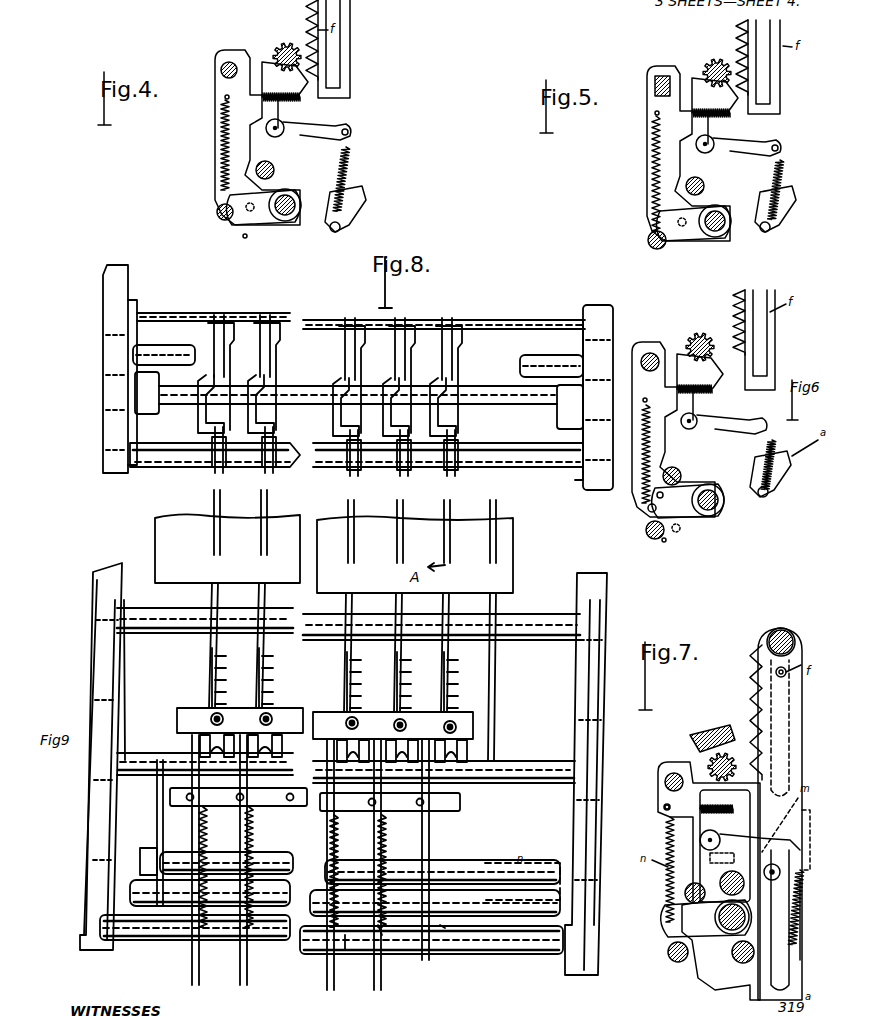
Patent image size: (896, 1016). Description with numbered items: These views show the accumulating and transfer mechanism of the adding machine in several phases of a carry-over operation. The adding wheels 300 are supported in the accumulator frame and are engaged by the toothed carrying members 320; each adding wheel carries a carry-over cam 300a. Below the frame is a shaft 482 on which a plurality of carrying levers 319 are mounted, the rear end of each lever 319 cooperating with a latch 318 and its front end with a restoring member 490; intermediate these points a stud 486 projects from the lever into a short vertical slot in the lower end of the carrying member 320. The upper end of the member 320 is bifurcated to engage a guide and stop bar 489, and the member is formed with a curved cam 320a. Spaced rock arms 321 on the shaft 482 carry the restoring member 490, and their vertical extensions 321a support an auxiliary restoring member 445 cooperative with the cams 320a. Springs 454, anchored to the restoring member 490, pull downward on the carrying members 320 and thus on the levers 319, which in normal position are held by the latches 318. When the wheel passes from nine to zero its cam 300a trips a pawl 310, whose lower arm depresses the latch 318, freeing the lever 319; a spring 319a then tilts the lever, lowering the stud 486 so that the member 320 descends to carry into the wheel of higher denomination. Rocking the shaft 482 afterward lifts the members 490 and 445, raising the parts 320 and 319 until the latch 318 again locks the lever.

In FIG. 4, the adding wheels 300 is at (290, 44).
In FIG. 5, the adding wheels 300 is at (733, 52).
In FIG. 6, the adding wheels 300 is at (700, 346).
In FIG. 7, the adding wheels 300 is at (705, 757).
In FIG. 9, the adding wheels 300 is at (268, 735).
In FIG. 6, the carry-over cam 300a is at (742, 320).
In FIG. 4, the pawl 310 is at (294, 118).
In FIG. 5, the pawl 310 is at (733, 138).
In FIG. 6, the pawl 310 is at (717, 404).
In FIG. 7, the pawl 310 is at (750, 836).
In FIG. 8, the pawl 310 is at (335, 382).
In FIG. 4, the latch 318 is at (360, 198).
In FIG. 5, the latch 318 is at (777, 229).
In FIG. 6, the latch 318 is at (788, 492).
In FIG. 7, the latch 318 is at (811, 926).
In FIG. 8, the latch 318 is at (453, 330).
In FIG. 4, the carrying lever 319 is at (318, 215).
In FIG. 5, the carrying lever 319 is at (753, 218).
In FIG. 6, the carrying lever 319 is at (775, 470).
In FIG. 7, the carrying lever 319 is at (663, 912).
In FIG. 4, the spring 319a is at (358, 170).
In FIG. 5, the spring 319a is at (790, 185).
In FIG. 4, the carrying member 320 is at (250, 55).
In FIG. 5, the carrying member 320 is at (658, 171).
In FIG. 6, the carrying member 320 is at (660, 343).
In FIG. 7, the carrying member 320 is at (661, 806).
In FIG. 9, the carrying member 320 is at (195, 830).
In FIG. 4, the curved cam 320a is at (289, 169).
In FIG. 4, the rock arms 321 is at (238, 223).
In FIG. 6, the rock arms 321 is at (677, 533).
In FIG. 7, the rock arms 321 is at (705, 965).
In FIG. 5, the vertical extensions 321a is at (703, 186).
In FIG. 6, the vertical extensions 321a is at (685, 482).
In FIG. 4, the auxiliary restoring member 445 is at (258, 160).
In FIG. 5, the auxiliary restoring member 445 is at (683, 190).
In FIG. 6, the auxiliary restoring member 445 is at (672, 468).
In FIG. 7, the auxiliary restoring member 445 is at (718, 884).
In FIG. 9, the auxiliary restoring member 445 is at (443, 930).
In FIG. 4, the springs 454 is at (222, 108).
In FIG. 5, the springs 454 is at (655, 128).
In FIG. 6, the springs 454 is at (645, 425).
In FIG. 7, the springs 454 is at (670, 869).
In FIG. 9, the springs 454 is at (380, 925).
In FIG. 4, the shaft 482 is at (284, 222).
In FIG. 5, the shaft 482 is at (718, 238).
In FIG. 6, the shaft 482 is at (706, 517).
In FIG. 7, the shaft 482 is at (717, 943).
In FIG. 9, the shaft 482 is at (503, 903).
In FIG. 4, the stud 486 is at (245, 238).
In FIG. 5, the stud 486 is at (682, 236).
In FIG. 6, the stud 486 is at (660, 541).
In FIG. 4, the guide and stop bar 489 is at (222, 66).
In FIG. 5, the guide and stop bar 489 is at (664, 76).
In FIG. 7, the guide and stop bar 489 is at (665, 781).
In FIG. 9, the guide and stop bar 489 is at (495, 790).
In FIG. 4, the restoring member 490 is at (217, 212).
In FIG. 5, the restoring member 490 is at (660, 252).
In FIG. 6, the restoring member 490 is at (646, 533).
In FIG. 9, the restoring member 490 is at (347, 953).